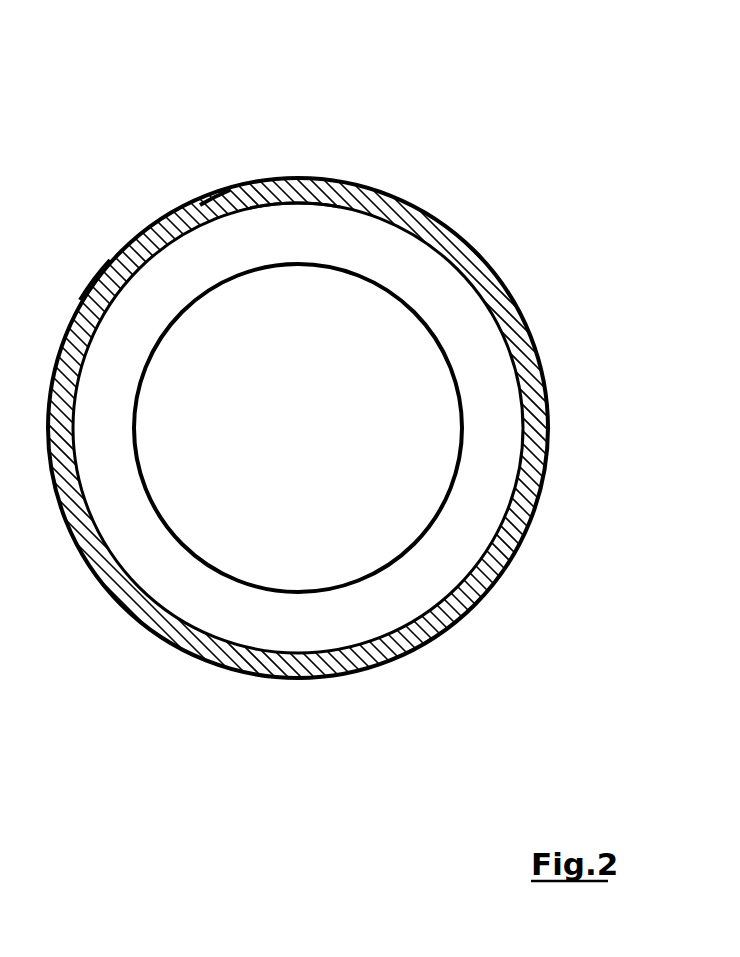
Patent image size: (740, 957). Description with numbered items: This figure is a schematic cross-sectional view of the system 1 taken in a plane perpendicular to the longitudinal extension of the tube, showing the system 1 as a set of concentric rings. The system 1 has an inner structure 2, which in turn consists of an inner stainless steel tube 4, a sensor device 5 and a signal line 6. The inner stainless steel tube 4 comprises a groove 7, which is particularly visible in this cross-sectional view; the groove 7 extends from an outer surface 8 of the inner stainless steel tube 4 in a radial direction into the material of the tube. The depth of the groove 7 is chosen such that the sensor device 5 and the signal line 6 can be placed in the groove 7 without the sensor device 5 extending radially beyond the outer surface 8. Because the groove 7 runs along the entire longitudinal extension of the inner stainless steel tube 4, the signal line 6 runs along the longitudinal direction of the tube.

The system 1 is at (552, 193).
The inner structure 2 is at (528, 395).
The inner stainless steel tube 4 is at (203, 660).
The sensor device 5 is at (287, 210).
The signal line 6 is at (317, 217).
The groove 7 is at (228, 210).
The outer surface 8 is at (133, 263).